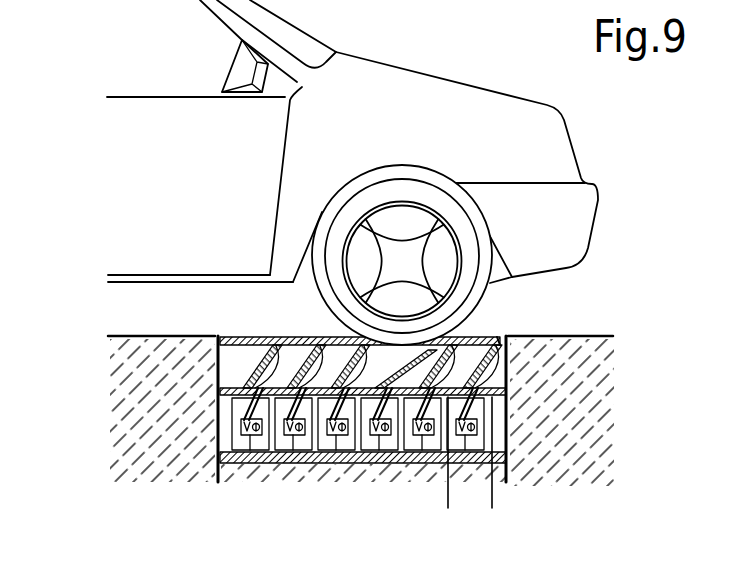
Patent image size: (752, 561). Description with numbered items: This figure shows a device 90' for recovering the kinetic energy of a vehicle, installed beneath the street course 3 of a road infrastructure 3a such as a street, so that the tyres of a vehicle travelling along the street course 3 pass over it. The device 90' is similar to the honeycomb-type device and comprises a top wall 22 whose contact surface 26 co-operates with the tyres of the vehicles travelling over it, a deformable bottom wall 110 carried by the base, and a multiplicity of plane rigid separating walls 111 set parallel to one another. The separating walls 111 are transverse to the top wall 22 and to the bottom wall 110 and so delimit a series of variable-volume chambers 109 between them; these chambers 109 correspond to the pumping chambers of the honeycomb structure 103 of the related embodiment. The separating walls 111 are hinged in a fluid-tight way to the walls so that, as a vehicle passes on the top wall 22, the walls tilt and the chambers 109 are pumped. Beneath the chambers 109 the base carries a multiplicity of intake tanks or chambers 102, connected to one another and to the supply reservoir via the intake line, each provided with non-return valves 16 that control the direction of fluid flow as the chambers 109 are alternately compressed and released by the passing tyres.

The road infrastructure 3a is at (148, 326).
The street course 3 is at (184, 327).
The device 90' is at (362, 347).
The top wall 22 is at (287, 331).
The contact surface 26 is at (475, 329).
The honeycomb structure 103 is at (500, 335).
The variable-volume chamber 109 is at (243, 373).
The deformable bottom wall 110 is at (442, 388).
The intake tanks or chambers 102 is at (250, 450).
The non-return valve 16 is at (388, 448).
The plane rigid separating walls 111 is at (472, 466).